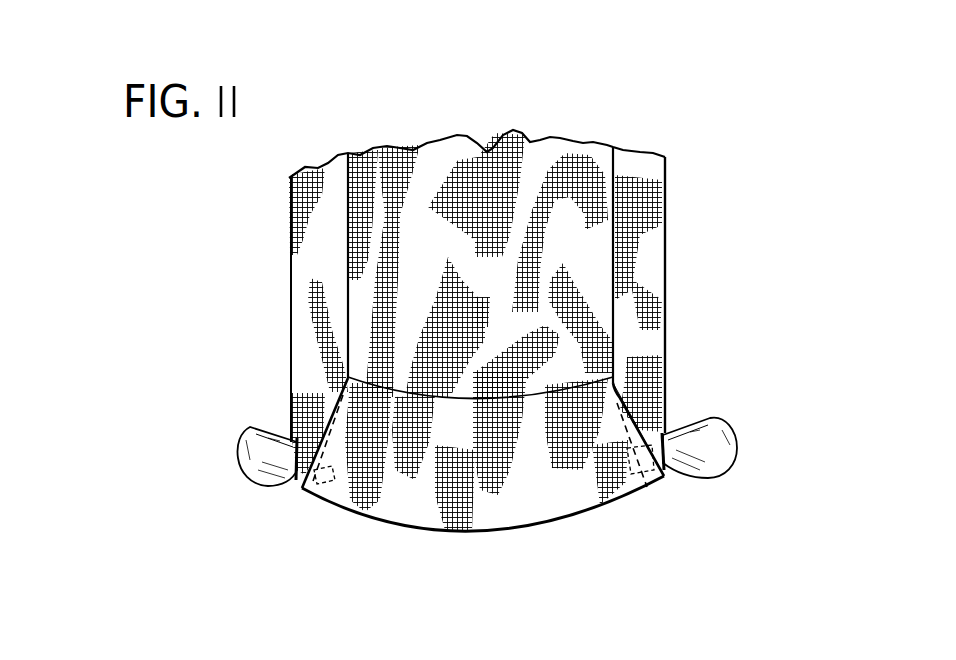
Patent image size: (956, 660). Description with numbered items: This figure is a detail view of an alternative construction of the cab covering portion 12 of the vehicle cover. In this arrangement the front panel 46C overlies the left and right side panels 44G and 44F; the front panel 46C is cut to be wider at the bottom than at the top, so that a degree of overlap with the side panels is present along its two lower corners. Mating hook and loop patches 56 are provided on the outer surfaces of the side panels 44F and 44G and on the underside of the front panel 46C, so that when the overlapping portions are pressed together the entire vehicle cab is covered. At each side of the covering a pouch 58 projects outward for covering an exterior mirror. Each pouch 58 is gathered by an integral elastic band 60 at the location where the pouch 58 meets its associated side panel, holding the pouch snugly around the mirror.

The closure 12 is at (162, 333).
The side panel 44G is at (297, 330).
The side panel 44F is at (657, 274).
The front panel 46C is at (445, 530).
The hook and loop patches 56 is at (296, 512).
The pouch 58 is at (225, 480).
The elastic band 60 is at (257, 420).